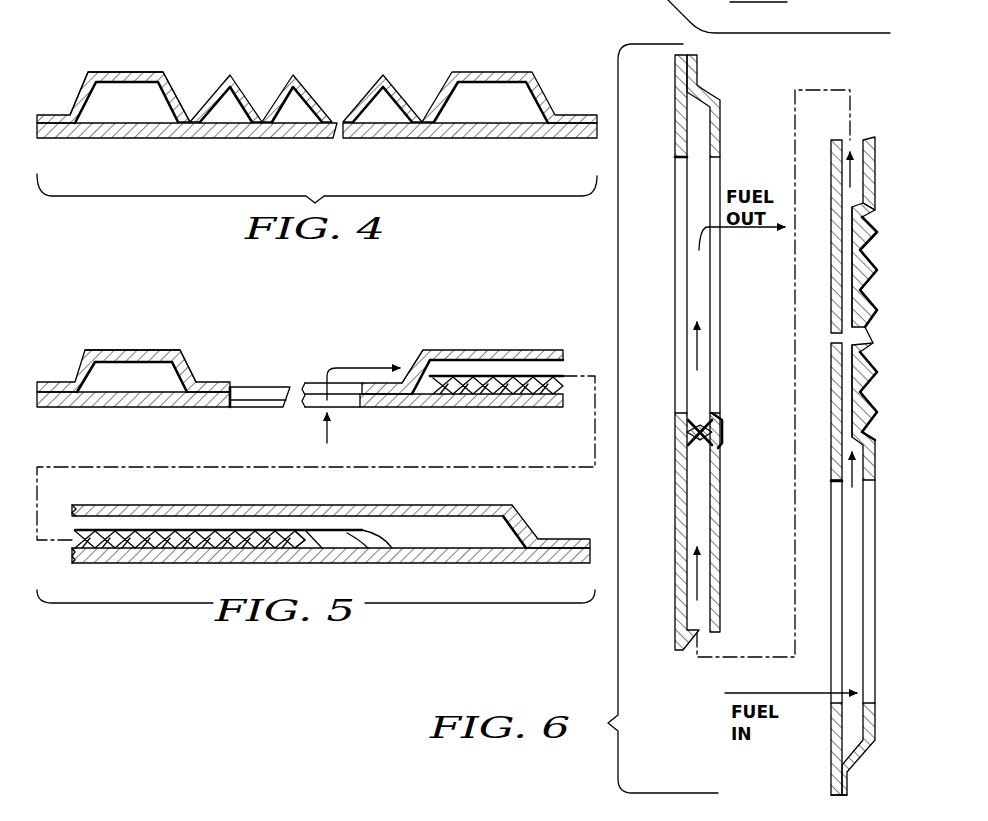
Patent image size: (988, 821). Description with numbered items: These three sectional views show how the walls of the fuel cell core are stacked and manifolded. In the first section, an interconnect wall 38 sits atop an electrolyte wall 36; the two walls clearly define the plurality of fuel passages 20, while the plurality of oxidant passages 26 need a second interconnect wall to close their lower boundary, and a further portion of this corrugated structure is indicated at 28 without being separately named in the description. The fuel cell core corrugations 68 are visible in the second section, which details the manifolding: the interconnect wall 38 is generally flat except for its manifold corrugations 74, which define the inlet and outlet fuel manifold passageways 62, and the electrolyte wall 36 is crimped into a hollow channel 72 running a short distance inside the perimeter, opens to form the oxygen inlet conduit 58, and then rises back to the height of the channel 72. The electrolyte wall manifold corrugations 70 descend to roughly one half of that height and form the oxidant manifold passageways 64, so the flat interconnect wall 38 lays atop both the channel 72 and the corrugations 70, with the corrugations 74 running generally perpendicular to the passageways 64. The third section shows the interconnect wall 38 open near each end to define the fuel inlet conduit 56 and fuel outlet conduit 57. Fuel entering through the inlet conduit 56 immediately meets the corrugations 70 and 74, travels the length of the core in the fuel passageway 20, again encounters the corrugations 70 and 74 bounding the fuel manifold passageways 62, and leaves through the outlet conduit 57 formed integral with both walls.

In FIG. 6, the fuel passages 20 is at (712, 576).
In FIG. 4, the oxidant passages 26 is at (229, 103).
In FIG. 4, the fin structure 28 is at (205, 64).
In FIG. 4, the electrolyte wall 36 is at (563, 113).
In FIG. 5, the electrolyte wall 36 is at (52, 380).
In FIG. 6, the electrolyte wall 36 is at (723, 120).
In FIG. 4, the interconnect wall 38 is at (415, 139).
In FIG. 5, the interconnect wall 38 is at (63, 408).
In FIG. 6, the interconnect wall 38 is at (677, 110).
In FIG. 6, the fuel inlet conduit 56 is at (832, 483).
In FIG. 6, the fuel outlet conduit 57 is at (677, 158).
In FIG. 5, the oxygen inlet conduit 58 is at (230, 401).
In FIG. 5, the fuel manifold passageways 62 is at (429, 387).
In FIG. 6, the oxidant manifold passageways 64 is at (874, 313).
In FIG. 4, the fuel cell core corrugations 68 is at (358, 86).
In FIG. 5, the fuel cell core corrugations 68 is at (300, 549).
In FIG. 5, the electrolyte wall manifold corrugations 70 is at (463, 367).
In FIG. 6, the electrolyte wall manifold corrugations 70 is at (722, 428).
In FIG. 5, the channel 72 is at (152, 350).
In FIG. 5, the interconnect wall manifold corrugations 74 is at (498, 408).
In FIG. 6, the interconnect wall manifold corrugations 74 is at (690, 440).